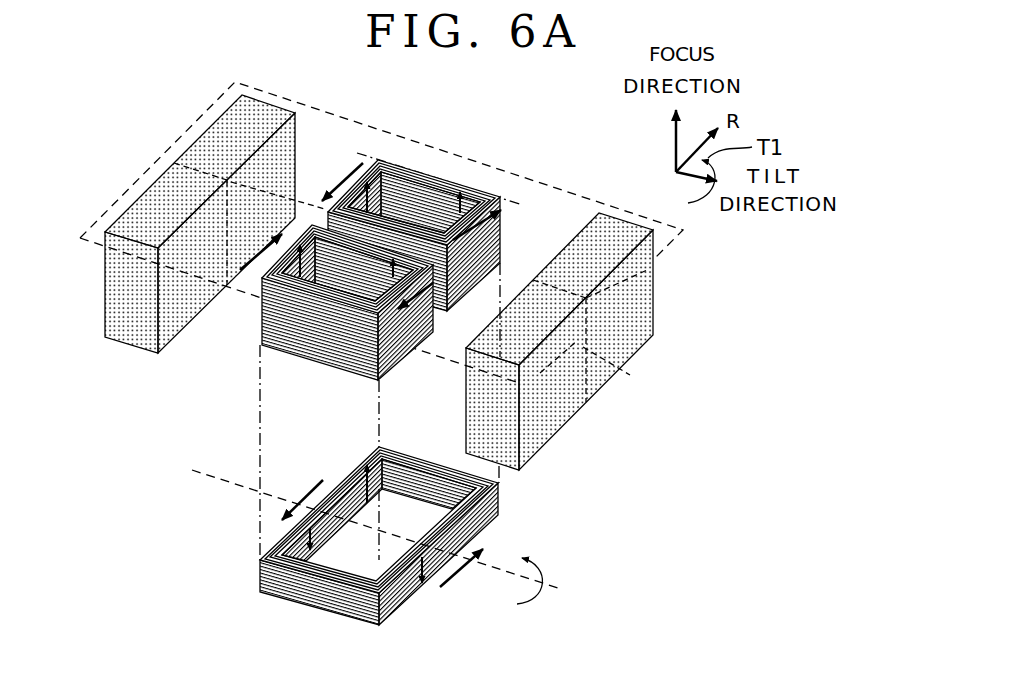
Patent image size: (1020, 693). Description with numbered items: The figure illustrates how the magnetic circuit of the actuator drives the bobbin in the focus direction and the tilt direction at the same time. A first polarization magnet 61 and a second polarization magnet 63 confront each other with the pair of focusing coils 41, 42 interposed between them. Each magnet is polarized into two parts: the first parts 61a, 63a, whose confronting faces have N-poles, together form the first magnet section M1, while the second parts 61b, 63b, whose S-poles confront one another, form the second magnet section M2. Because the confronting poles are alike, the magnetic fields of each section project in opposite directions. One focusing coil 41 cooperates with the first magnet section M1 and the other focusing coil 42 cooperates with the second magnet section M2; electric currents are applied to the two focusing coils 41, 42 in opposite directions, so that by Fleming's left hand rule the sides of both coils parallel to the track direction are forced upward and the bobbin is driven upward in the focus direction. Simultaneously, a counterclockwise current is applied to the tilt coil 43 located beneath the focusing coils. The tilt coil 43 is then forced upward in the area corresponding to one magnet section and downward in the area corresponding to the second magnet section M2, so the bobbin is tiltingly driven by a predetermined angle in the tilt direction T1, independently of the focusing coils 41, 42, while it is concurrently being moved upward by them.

The focusing coil 41 is at (418, 187).
The focusing coil 42 is at (272, 333).
The tilt coil 43 is at (302, 583).
The first polarization magnet 61 is at (575, 364).
The N-pole part of first polarization magnet 61a is at (610, 383).
The S-pole part of first polarization magnet 61b is at (572, 397).
The second polarization magnet 63 is at (188, 210).
The N-pole part of second polarization magnet 63a is at (197, 140).
The S-pole part of second polarization magnet 63b is at (152, 197).
The first magnet section M1 is at (655, 275).
The second magnet section M2 is at (630, 375).
The tilt direction T1 is at (536, 553).